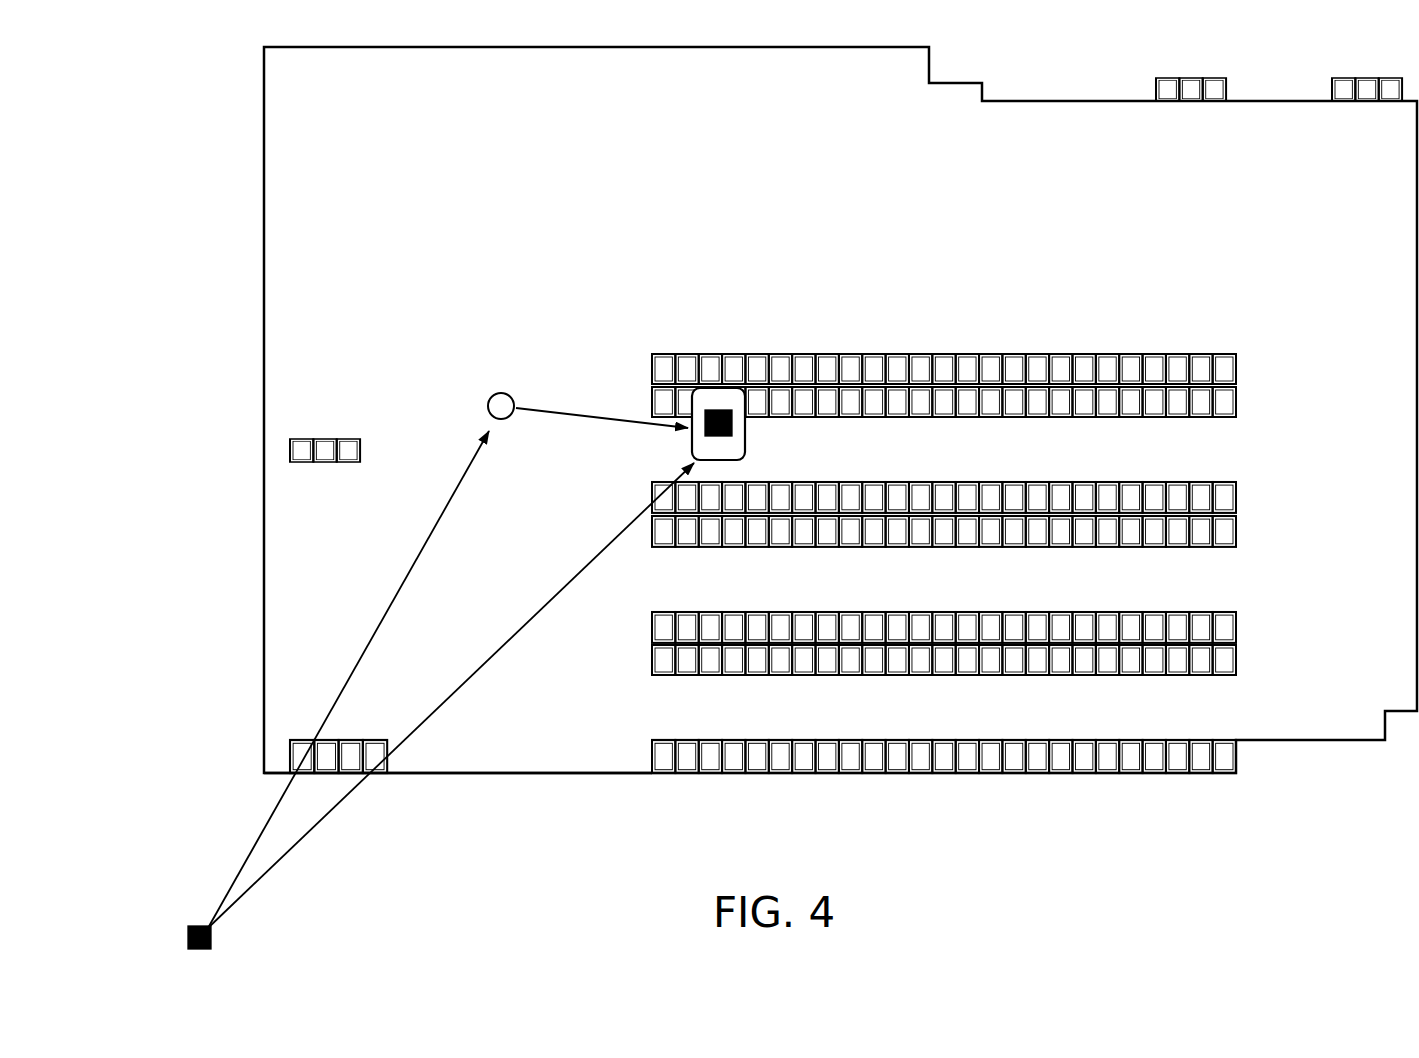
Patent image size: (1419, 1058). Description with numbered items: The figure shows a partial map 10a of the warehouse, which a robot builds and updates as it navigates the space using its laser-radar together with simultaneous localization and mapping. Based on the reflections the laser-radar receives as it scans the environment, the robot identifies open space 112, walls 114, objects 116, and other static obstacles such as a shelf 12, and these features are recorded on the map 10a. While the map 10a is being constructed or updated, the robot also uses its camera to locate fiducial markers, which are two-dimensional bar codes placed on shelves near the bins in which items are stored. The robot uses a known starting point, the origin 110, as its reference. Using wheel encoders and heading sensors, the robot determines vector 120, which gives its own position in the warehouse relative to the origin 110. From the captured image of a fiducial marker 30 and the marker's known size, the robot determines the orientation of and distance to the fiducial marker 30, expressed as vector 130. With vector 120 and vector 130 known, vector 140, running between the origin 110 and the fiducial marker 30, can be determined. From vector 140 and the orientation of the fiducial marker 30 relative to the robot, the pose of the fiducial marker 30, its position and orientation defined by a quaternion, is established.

The map 10a is at (817, 221).
The shelf 12 is at (989, 366).
The open space 112 is at (1110, 462).
The walls 114 is at (567, 774).
The objects 116 is at (327, 438).
The origin 110 is at (187, 938).
The vector 120 is at (392, 600).
The vector 130 is at (598, 417).
The vector 140 is at (500, 649).
The fiducial marker 30 is at (692, 447).